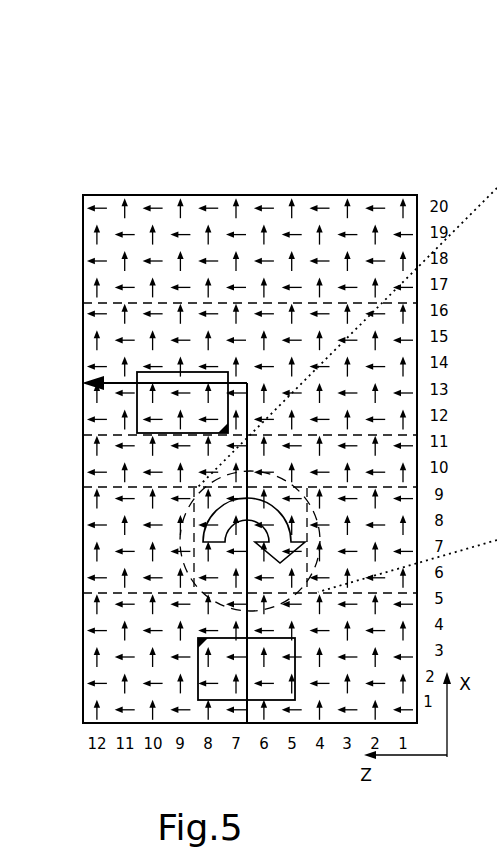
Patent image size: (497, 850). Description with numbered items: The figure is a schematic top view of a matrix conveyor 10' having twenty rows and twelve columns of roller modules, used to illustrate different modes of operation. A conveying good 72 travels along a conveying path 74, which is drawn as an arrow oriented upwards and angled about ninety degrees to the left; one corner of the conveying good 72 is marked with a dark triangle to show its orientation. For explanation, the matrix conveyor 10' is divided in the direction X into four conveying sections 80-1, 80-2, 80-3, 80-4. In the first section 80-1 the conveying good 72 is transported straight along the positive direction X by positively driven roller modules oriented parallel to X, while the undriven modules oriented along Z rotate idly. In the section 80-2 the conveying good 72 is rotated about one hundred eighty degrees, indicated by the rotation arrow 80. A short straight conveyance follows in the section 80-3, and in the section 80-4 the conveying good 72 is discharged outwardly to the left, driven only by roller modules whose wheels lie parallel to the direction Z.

The matrix conveyor 10' is at (250, 374).
The conveying good 72 is at (171, 416).
The conveying path 74 is at (247, 651).
The rotation of the conveying good 80 is at (254, 530).
The first conveying section 80-1 is at (80, 596).
The second conveying section 80-2 is at (80, 490).
The third conveying section 80-3 is at (80, 437).
The fourth conveying section 80-4 is at (80, 303).